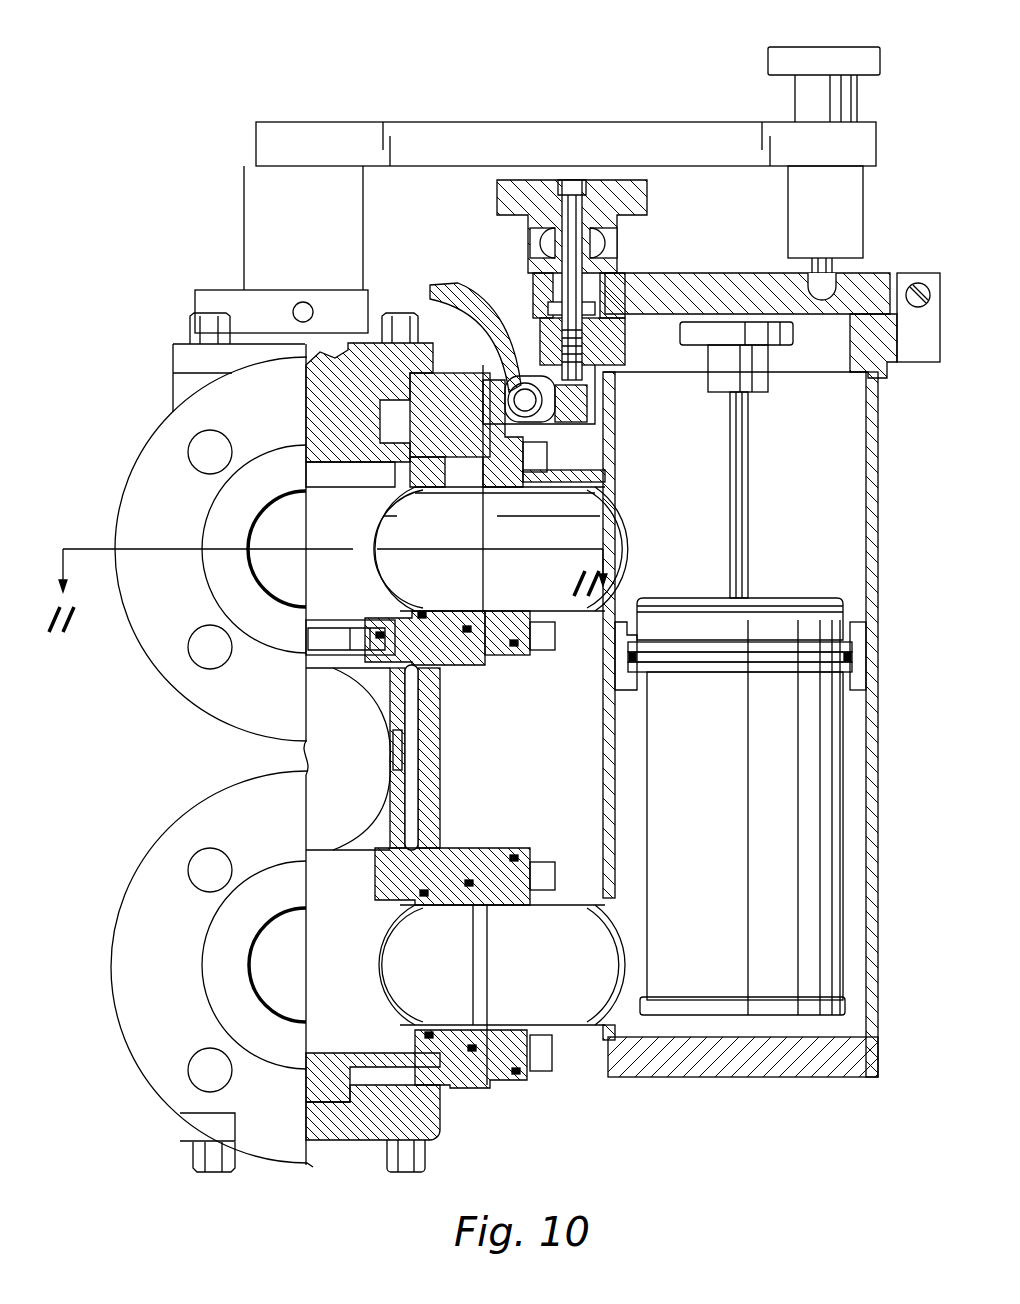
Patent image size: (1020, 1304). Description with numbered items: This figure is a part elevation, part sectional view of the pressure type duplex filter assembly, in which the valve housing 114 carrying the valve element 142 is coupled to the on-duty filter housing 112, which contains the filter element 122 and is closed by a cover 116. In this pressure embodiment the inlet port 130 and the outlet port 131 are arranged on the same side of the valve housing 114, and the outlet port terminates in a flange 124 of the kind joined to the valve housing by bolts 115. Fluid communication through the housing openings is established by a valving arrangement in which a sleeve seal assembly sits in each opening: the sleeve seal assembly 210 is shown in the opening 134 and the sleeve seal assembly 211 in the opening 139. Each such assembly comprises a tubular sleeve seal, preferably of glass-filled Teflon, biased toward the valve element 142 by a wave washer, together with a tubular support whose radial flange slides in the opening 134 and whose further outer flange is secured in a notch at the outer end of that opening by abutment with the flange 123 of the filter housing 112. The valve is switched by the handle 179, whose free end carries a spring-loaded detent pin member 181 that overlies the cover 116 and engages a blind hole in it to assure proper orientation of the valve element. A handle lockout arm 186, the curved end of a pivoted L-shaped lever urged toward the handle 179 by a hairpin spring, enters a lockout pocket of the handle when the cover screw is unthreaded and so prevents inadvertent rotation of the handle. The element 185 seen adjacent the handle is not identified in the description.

The on-duty filter housing 112 is at (878, 790).
The valve housing 114 is at (175, 365).
The bolts 115 is at (545, 1072).
The cover 116 is at (875, 275).
The filter element 122 is at (840, 725).
The flange of filter housing 123 is at (505, 660).
The outlet port flange 124 is at (500, 850).
The inlet port 130 is at (118, 525).
The outlet port 131 is at (120, 1020).
The housing opening 134 is at (480, 460).
The housing opening 139 is at (475, 1030).
The valve element 142 is at (373, 1075).
The handle 179 is at (425, 124).
The detent pin member 181 is at (770, 62).
The bearing hub 185 is at (600, 180).
The handle lockout arm 186 is at (445, 285).
The sleeve seal assembly 210 is at (465, 610).
The sleeve seal assembly 211 is at (465, 905).